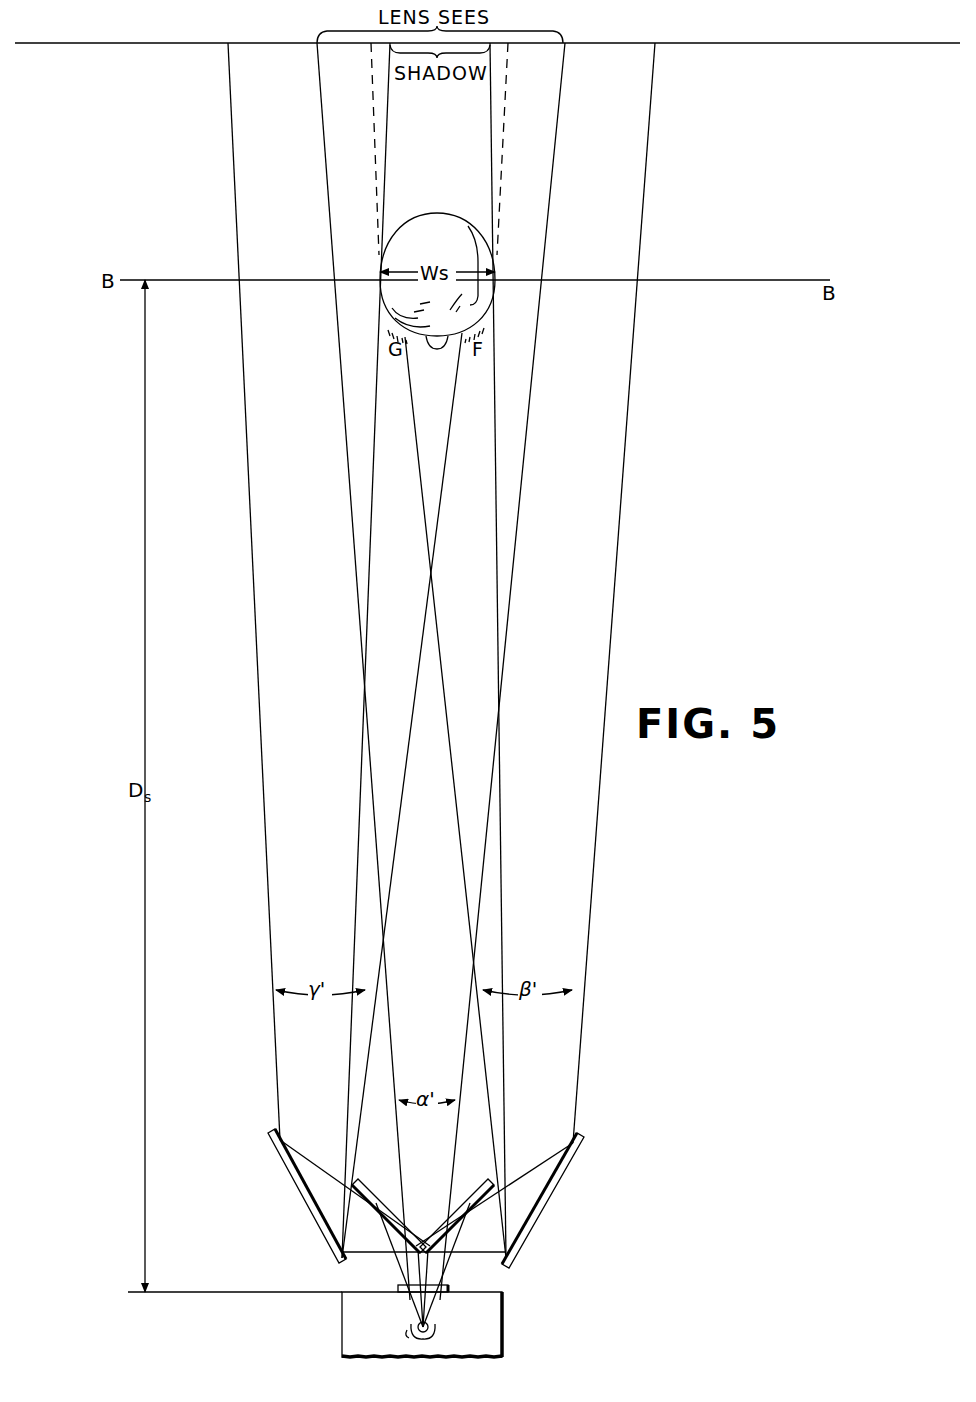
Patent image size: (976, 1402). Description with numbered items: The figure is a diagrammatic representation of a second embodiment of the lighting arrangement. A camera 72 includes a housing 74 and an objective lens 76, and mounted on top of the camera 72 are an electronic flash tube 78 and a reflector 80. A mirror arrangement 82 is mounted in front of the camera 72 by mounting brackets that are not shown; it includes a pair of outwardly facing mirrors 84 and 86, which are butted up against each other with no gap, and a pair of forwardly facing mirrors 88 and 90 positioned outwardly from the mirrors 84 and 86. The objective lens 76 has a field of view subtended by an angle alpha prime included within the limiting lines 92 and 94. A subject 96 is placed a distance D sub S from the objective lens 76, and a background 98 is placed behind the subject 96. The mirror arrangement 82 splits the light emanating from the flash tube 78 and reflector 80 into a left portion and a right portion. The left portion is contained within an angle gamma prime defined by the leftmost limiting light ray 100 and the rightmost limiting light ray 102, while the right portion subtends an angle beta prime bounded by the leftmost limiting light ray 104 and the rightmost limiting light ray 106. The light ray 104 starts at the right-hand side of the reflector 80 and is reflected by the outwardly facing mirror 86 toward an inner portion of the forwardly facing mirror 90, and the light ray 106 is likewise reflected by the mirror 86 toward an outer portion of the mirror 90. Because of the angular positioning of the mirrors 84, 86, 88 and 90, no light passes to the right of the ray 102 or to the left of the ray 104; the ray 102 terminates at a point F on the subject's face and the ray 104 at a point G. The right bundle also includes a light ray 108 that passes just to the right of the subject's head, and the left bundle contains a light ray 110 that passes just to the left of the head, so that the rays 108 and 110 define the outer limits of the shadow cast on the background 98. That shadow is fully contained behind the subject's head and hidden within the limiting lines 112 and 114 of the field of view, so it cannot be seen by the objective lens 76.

The camera 72 is at (512, 1319).
The housing 74 is at (507, 1302).
The objective lens 76 is at (451, 1288).
The electronic flash tube 78 is at (430, 1323).
The reflector 80 is at (410, 1332).
The mirror arrangement 82 is at (556, 1218).
The outwardly facing mirror 84 is at (385, 1178).
The outwardly facing mirror 86 is at (478, 1193).
The forwardly facing mirror 88 is at (292, 1177).
The forwardly facing mirror 90 is at (568, 1160).
The limiting line 92 is at (390, 1036).
The limiting line 94 is at (462, 1040).
The subject 96 is at (440, 228).
The background 98 is at (487, 62).
The limiting light ray 100 is at (261, 745).
The limiting light ray 102 is at (403, 774).
The limiting light ray 104 is at (445, 698).
The limiting light ray 106 is at (609, 683).
The light ray 108 is at (502, 746).
The light ray 110 is at (360, 748).
The limiting line 112 is at (374, 161).
The limiting line 114 is at (501, 161).